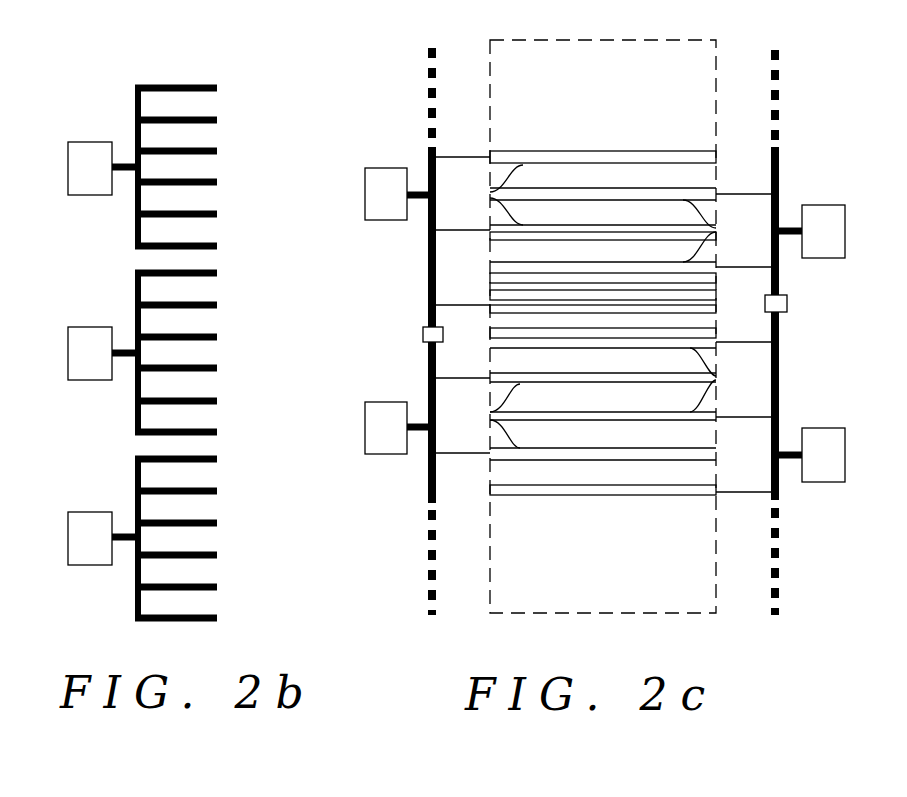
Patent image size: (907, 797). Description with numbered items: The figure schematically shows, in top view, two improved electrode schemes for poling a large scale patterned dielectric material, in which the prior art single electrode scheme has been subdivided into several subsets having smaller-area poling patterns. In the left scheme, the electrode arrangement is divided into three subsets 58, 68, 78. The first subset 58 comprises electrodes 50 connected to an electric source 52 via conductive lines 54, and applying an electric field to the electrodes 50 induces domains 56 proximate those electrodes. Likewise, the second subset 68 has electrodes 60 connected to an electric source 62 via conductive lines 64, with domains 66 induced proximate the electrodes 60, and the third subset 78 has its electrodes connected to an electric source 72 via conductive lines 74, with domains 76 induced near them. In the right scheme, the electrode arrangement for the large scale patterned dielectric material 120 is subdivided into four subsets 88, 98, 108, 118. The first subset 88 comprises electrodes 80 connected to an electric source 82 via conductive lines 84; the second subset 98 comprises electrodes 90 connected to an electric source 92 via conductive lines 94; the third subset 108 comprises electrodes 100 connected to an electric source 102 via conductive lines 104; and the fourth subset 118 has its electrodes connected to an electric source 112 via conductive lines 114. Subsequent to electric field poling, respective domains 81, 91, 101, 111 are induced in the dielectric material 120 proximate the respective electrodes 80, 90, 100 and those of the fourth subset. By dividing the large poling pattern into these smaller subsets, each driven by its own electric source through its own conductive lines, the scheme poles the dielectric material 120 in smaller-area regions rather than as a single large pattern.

In FIG. 2B, the electrodes 50 is at (212, 121).
In FIG. 2B, the electric source 52 is at (68, 165).
In FIG. 2B, the conductive lines 54 is at (135, 222).
In FIG. 2B, the domains 56 is at (212, 183).
In FIG. 2B, the subset 58 is at (140, 146).
In FIG. 2B, the electrodes 60 is at (212, 338).
In FIG. 2B, the electric source 62 is at (68, 352).
In FIG. 2B, the conductive lines 64 is at (135, 415).
In FIG. 2B, the domains 66 is at (212, 402).
In FIG. 2B, the subset 68 is at (148, 379).
In FIG. 2B, the electric source 72 is at (68, 539).
In FIG. 2B, the conductive lines 74 is at (135, 595).
In FIG. 2B, the domains 76 is at (212, 556).
In FIG. 2B, the subset 78 is at (148, 522).
In FIG. 2C, the electrodes 80 is at (490, 195).
In FIG. 2C, the domains 81 is at (580, 150).
In FIG. 2C, the electric source 82 is at (365, 194).
In FIG. 2C, the conductive lines 84 is at (428, 257).
In FIG. 2C, the subset 88 is at (376, 275).
In FIG. 2C, the electrodes 90 is at (716, 230).
In FIG. 2C, the domains 91 is at (612, 232).
In FIG. 2C, the electric source 92 is at (846, 230).
In FIG. 2C, the conductive lines 94 is at (780, 283).
In FIG. 2C, the subset 98 is at (835, 332).
In FIG. 2C, the electrodes 100 is at (490, 416).
In FIG. 2C, the domains 101 is at (592, 381).
In FIG. 2C, the electric source 102 is at (373, 424).
In FIG. 2C, the conductive lines 104 is at (428, 503).
In FIG. 2C, the subset 108 is at (380, 466).
In FIG. 2C, the domains 111 is at (662, 419).
In FIG. 2C, the electric source 112 is at (846, 451).
In FIG. 2C, the conductive lines 114 is at (780, 503).
In FIG. 2C, the subset 118 is at (716, 378).
In FIG. 2C, the dielectric material 120 is at (700, 550).